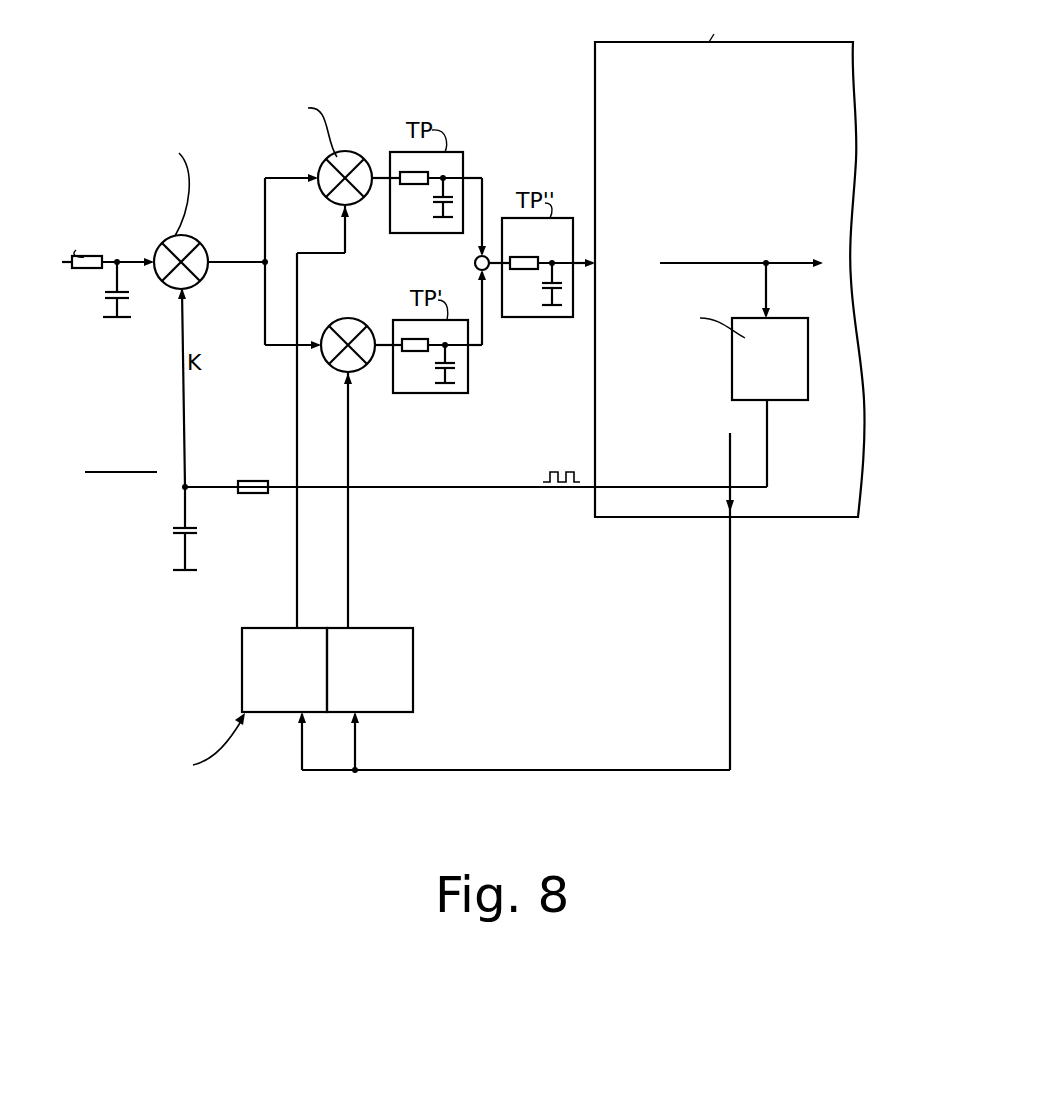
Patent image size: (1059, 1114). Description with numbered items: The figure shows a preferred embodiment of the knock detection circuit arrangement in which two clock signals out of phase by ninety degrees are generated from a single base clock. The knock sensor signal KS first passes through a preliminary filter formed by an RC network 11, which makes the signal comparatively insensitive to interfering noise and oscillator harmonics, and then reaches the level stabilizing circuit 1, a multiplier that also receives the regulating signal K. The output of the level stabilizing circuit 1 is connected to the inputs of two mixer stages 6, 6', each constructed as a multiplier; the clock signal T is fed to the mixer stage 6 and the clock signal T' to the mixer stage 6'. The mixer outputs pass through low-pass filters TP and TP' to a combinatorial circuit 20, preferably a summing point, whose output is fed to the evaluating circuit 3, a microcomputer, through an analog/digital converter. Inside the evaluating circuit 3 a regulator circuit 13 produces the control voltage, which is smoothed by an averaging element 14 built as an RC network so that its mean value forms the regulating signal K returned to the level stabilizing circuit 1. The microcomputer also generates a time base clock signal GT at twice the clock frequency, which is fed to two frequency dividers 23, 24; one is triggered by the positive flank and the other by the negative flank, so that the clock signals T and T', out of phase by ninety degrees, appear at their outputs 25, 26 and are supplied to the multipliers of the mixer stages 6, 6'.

The level stabilizing circuit 1 is at (186, 231).
The evaluating circuit 3 is at (785, 74).
The mixer stage 6 is at (315, 132).
The second mixer stage 6' is at (362, 312).
The RC network 11 is at (95, 279).
The regulator circuit 13 is at (742, 363).
The averaging element 14 is at (207, 505).
The combinatorial circuit 20 is at (488, 272).
The frequency divider 23 is at (256, 631).
The frequency divider 24 is at (390, 643).
The output of frequency divider 25 is at (297, 608).
The output of frequency divider 26 is at (358, 603).